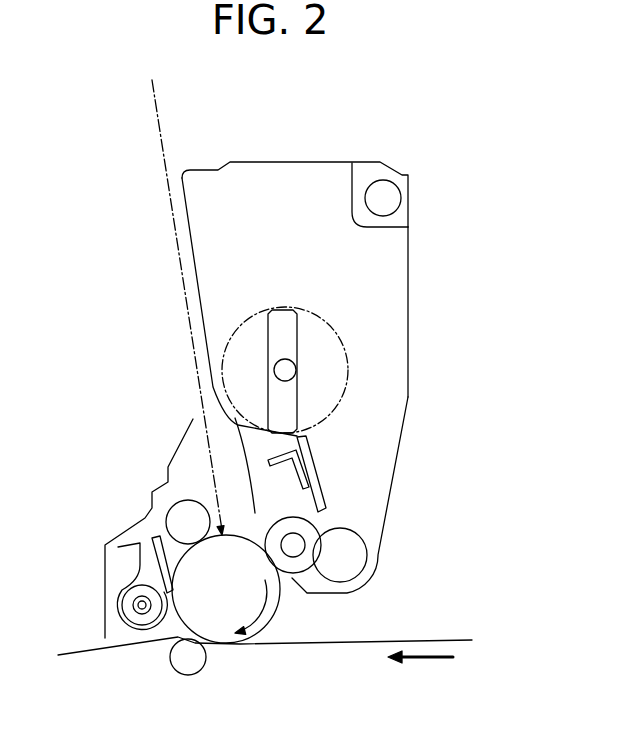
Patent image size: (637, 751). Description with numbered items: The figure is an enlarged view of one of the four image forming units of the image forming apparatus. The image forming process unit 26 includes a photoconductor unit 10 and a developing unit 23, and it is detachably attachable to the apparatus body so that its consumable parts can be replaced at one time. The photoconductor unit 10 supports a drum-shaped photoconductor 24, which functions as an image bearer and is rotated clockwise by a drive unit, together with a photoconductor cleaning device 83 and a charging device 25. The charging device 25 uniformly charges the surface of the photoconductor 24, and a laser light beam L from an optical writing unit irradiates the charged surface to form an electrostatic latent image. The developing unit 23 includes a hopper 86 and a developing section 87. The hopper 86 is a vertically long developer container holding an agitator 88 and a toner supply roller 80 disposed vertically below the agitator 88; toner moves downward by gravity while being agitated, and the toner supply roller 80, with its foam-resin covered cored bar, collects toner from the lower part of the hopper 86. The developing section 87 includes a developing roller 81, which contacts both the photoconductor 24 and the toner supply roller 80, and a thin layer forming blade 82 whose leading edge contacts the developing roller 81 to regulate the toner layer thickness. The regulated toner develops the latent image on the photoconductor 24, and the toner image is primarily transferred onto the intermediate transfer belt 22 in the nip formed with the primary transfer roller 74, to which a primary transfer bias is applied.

The laser light beam L is at (154, 85).
The photoconductor unit 10 is at (127, 518).
The intermediate transfer belt 22 is at (311, 646).
The developing unit 23 is at (413, 265).
The drum-shaped photoconductor 24 is at (213, 604).
The charging device 25 is at (185, 495).
The image forming process unit 26 is at (437, 173).
The primary transfer roller 74 is at (205, 663).
The toner supply roller 80 is at (362, 553).
The developing roller 81 is at (312, 527).
The thin layer forming blade 82 is at (313, 517).
The photoconductor cleaning device 83 is at (127, 568).
The hopper 86 is at (400, 300).
The developing section 87 is at (275, 476).
The agitator 88 is at (285, 320).